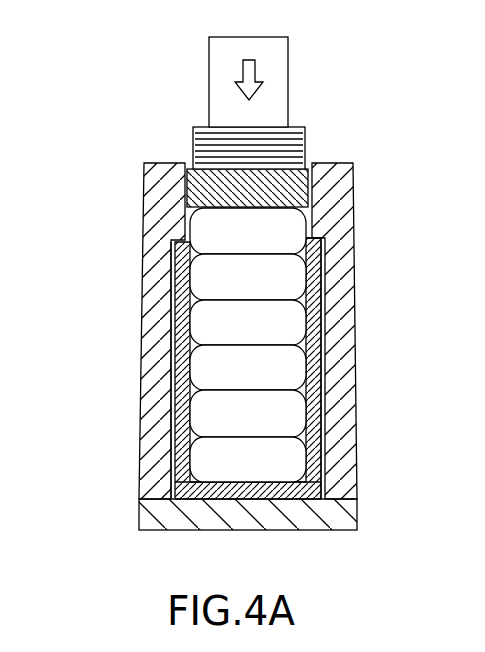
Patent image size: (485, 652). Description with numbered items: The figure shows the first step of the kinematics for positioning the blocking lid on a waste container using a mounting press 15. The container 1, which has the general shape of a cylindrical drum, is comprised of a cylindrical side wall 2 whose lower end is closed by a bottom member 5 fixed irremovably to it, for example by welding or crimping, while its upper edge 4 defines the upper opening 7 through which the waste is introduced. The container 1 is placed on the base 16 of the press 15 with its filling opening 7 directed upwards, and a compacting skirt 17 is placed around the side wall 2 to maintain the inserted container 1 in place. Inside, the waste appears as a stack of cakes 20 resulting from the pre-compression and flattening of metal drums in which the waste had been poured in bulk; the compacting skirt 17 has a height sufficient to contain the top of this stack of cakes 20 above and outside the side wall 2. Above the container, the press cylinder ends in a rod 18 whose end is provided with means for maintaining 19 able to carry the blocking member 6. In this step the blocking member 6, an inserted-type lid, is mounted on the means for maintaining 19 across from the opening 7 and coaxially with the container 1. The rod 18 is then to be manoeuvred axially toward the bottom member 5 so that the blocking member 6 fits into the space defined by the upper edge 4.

The press 15 is at (249, 311).
The cylinder rod 18 is at (278, 60).
The means for maintaining 19 is at (202, 132).
The blocking member 6 is at (198, 190).
The upper opening 7 is at (229, 223).
The upper edge 4 is at (312, 243).
The cakes 20 is at (257, 345).
The container 1 is at (175, 328).
The side wall 2 is at (248, 408).
The compacting skirt 17 is at (156, 470).
The base 16 is at (148, 517).
The bottom member 5 is at (195, 500).